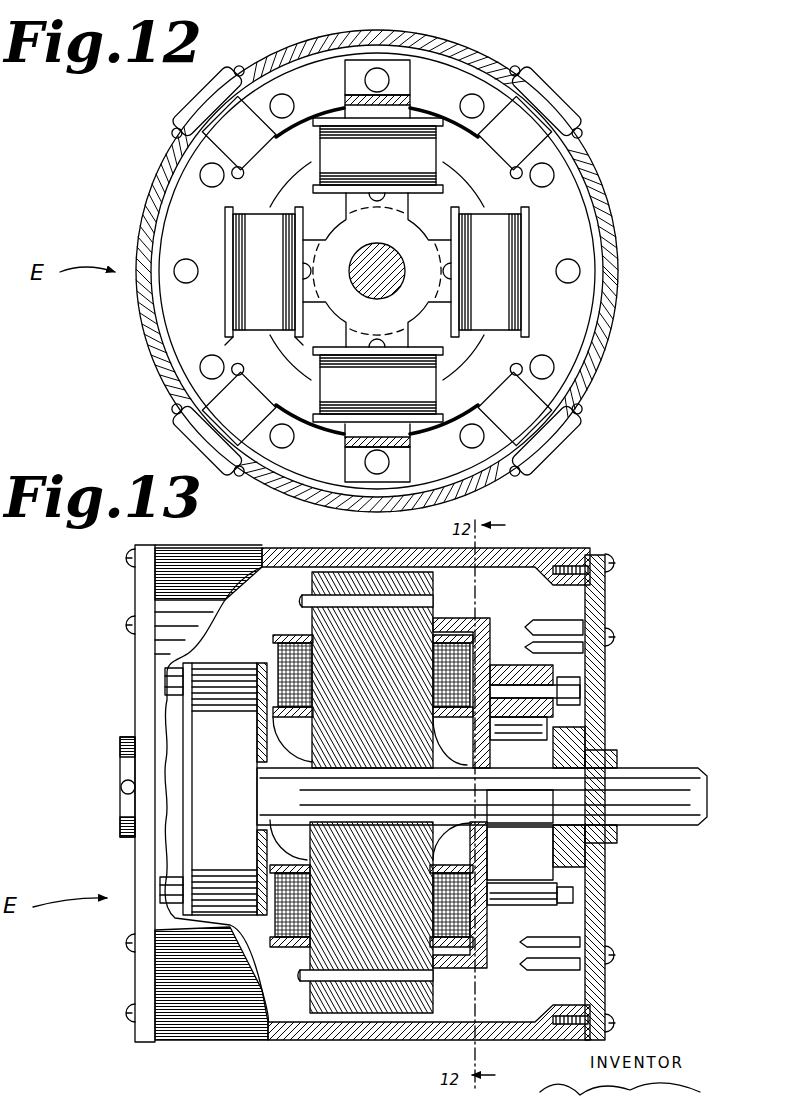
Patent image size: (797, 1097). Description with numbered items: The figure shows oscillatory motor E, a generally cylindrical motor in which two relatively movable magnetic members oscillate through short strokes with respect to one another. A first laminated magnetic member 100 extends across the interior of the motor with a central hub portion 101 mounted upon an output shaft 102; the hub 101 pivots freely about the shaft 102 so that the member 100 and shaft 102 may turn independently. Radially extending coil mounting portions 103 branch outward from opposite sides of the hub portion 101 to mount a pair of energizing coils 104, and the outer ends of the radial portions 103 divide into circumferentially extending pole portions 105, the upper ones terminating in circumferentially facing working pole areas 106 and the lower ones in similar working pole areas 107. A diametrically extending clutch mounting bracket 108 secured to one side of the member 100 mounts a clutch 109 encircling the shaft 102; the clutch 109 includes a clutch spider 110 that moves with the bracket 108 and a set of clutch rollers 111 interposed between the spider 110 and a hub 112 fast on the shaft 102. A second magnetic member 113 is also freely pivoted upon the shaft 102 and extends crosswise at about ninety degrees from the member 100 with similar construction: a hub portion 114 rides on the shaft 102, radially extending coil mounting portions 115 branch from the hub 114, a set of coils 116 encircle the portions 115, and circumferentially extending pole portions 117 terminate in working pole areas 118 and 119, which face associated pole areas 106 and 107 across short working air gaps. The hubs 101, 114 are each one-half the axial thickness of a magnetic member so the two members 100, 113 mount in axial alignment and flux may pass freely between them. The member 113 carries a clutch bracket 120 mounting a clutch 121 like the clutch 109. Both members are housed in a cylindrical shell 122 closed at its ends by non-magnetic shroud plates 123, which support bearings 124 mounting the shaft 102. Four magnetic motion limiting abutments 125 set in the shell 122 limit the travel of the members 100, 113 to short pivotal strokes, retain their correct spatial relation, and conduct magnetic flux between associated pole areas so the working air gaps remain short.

In FIG. 12, the first laminated magnetic member 100 is at (469, 80).
In FIG. 13, the first laminated magnetic member 100 is at (364, 1002).
In FIG. 12, the hub portion 101 is at (437, 218).
In FIG. 13, the hub portion 101 is at (433, 753).
In FIG. 12, the output shaft 102 is at (374, 298).
In FIG. 13, the output shaft 102 is at (675, 768).
In FIG. 12, the coil mounting portions 103 is at (350, 108).
In FIG. 13, the coil mounting portions 103 is at (457, 618).
In FIG. 12, the energizing coils 104 is at (442, 162).
In FIG. 13, the energizing coils 104 is at (297, 635).
In FIG. 12, the pole portions 105 is at (290, 82).
In FIG. 12, the working pole areas 106 is at (266, 141).
In FIG. 12, the working pole areas 107 is at (493, 402).
In FIG. 12, the clutch mounting bracket 108 is at (410, 78).
In FIG. 13, the clutch mounting bracket 108 is at (490, 633).
In FIG. 13, the clutch 109 is at (542, 866).
In FIG. 13, the clutch spider 110 is at (523, 668).
In FIG. 13, the clutch rollers 111 is at (537, 725).
In FIG. 13, the hub 112 is at (540, 795).
In FIG. 12, the second magnetic member 113 is at (185, 234).
In FIG. 13, the second magnetic member 113 is at (321, 832).
In FIG. 12, the hub portion 114 is at (350, 207).
In FIG. 13, the hub portion 114 is at (312, 742).
In FIG. 12, the coil mounting portions 115 is at (310, 248).
In FIG. 12, the coils 116 is at (272, 207).
In FIG. 13, the coils 116 is at (447, 840).
In FIG. 12, the pole portions 117 is at (190, 172).
In FIG. 12, the working pole areas 118 is at (258, 162).
In FIG. 12, the working pole areas 119 is at (570, 118).
In FIG. 12, the clutch bracket 120 is at (292, 358).
In FIG. 13, the clutch bracket 120 is at (268, 663).
In FIG. 13, the clutch 121 is at (214, 716).
In FIG. 12, the cylindrical shell 122 is at (605, 340).
In FIG. 13, the cylindrical shell 122 is at (290, 1045).
In FIG. 12, the shroud plates 123 is at (513, 365).
In FIG. 13, the shroud plates 123 is at (143, 868).
In FIG. 13, the bearings 124 is at (127, 835).
In FIG. 12, the magnetic motion limiting abutments 125 is at (197, 92).